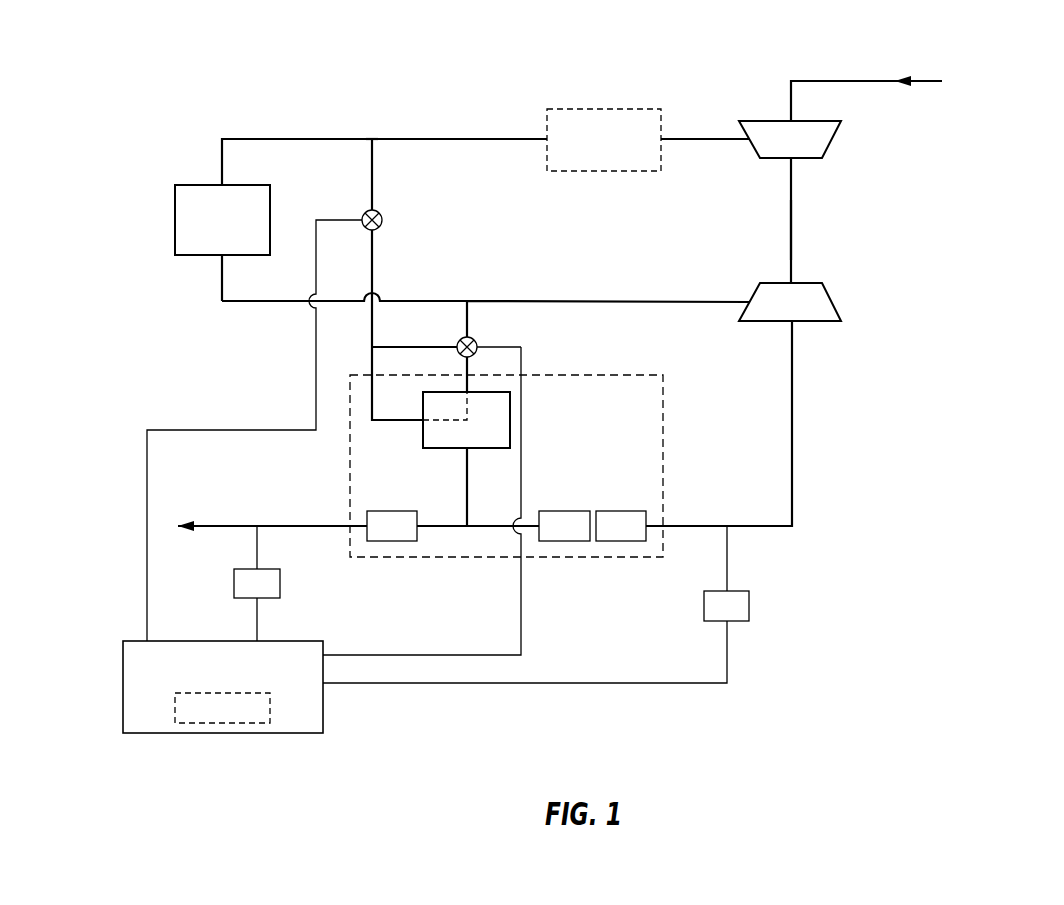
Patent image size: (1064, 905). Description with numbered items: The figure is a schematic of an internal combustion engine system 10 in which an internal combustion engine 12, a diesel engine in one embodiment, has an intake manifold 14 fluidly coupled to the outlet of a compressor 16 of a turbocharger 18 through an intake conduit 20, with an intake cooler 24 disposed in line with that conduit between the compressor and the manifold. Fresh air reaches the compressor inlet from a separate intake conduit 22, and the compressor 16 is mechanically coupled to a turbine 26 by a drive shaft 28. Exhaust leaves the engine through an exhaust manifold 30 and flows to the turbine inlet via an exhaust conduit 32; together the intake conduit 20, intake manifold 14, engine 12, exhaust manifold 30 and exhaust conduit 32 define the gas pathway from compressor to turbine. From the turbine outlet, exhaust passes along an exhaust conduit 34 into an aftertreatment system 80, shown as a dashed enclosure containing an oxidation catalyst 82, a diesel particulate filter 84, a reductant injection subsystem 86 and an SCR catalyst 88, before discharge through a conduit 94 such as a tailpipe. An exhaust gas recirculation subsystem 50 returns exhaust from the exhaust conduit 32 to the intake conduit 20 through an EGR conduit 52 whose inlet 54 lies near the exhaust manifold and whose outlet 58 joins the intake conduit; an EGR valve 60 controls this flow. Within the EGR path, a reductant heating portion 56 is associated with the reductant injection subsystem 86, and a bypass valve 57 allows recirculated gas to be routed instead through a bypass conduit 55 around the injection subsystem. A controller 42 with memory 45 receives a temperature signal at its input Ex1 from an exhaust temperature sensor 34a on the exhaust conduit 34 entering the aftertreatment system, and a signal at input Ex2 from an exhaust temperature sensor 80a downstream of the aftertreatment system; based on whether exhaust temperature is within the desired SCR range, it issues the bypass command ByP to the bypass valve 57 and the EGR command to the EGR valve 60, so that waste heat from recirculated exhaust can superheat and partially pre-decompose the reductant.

The internal combustion engine system 10 is at (840, 439).
The internal combustion engine 12 is at (222, 220).
The intake manifold 14 is at (200, 185).
The compressor 16 is at (833, 140).
The turbocharger 18 is at (840, 238).
The intake conduit 20 is at (487, 139).
The intake conduit 22 is at (850, 80).
The intake cooler 24 is at (610, 109).
The turbine 26 is at (833, 302).
The drive shaft 28 is at (791, 227).
The exhaust manifold 30 is at (200, 257).
The exhaust conduit 32 is at (265, 302).
The exhaust conduit 34 is at (794, 405).
The exhaust temperature sensor 34a is at (750, 605).
The controller 42 is at (120, 686).
The memory 45 is at (217, 723).
The exhaust gas recirculation subsystem 50 is at (385, 266).
The EGR conduit 52 is at (372, 172).
The inlet 54 is at (467, 297).
The bypass conduit 55 is at (437, 347).
The reductant heating portion 56 is at (450, 425).
The reductant heating portion bypass valve 57 is at (479, 342).
The outlet 58 is at (375, 143).
The EGR valve 60 is at (383, 220).
The aftertreatment system 80 is at (668, 440).
The exhaust temperature sensor 80a is at (282, 585).
The oxidation catalyst 82 is at (620, 511).
The diesel particulate filter 84 is at (565, 511).
The reductant injection subsystem 86 is at (512, 423).
The SCR catalyst 88 is at (392, 511).
The conduit 94 is at (213, 528).